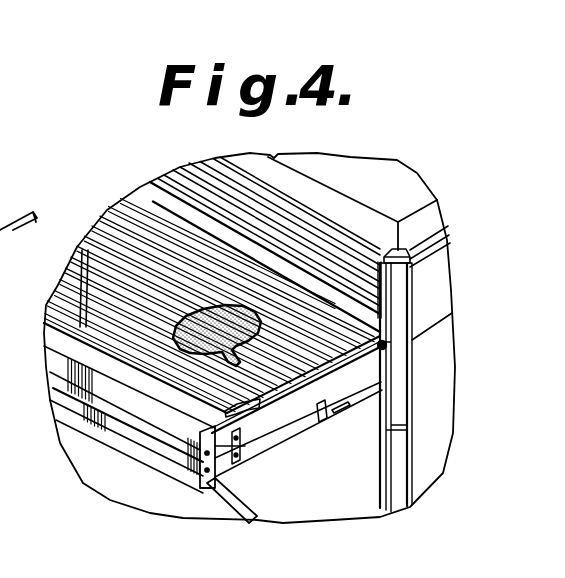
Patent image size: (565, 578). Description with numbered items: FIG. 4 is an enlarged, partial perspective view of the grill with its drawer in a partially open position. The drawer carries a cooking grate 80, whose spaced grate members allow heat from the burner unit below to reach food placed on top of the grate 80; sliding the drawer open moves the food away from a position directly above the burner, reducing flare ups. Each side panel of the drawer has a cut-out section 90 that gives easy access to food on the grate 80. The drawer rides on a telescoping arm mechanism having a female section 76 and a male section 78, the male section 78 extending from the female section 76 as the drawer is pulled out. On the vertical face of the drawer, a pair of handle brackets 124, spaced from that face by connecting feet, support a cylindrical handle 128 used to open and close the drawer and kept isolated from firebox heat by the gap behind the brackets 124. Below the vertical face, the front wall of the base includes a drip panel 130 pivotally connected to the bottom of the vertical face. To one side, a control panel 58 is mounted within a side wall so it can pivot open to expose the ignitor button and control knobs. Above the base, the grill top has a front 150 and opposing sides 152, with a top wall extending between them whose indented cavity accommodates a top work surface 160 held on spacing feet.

The control panel 58 is at (402, 413).
The female section 76 is at (359, 400).
The male section 78 is at (275, 440).
The cooking grate 80 is at (112, 252).
The cut-out section 90 is at (284, 390).
The handle brackets 124 is at (158, 452).
The cylindrical handle 128 is at (63, 390).
The drip panel 130 is at (237, 498).
The front 150 is at (148, 183).
The opposing sides 152 is at (445, 295).
The top work surface 160 is at (358, 162).